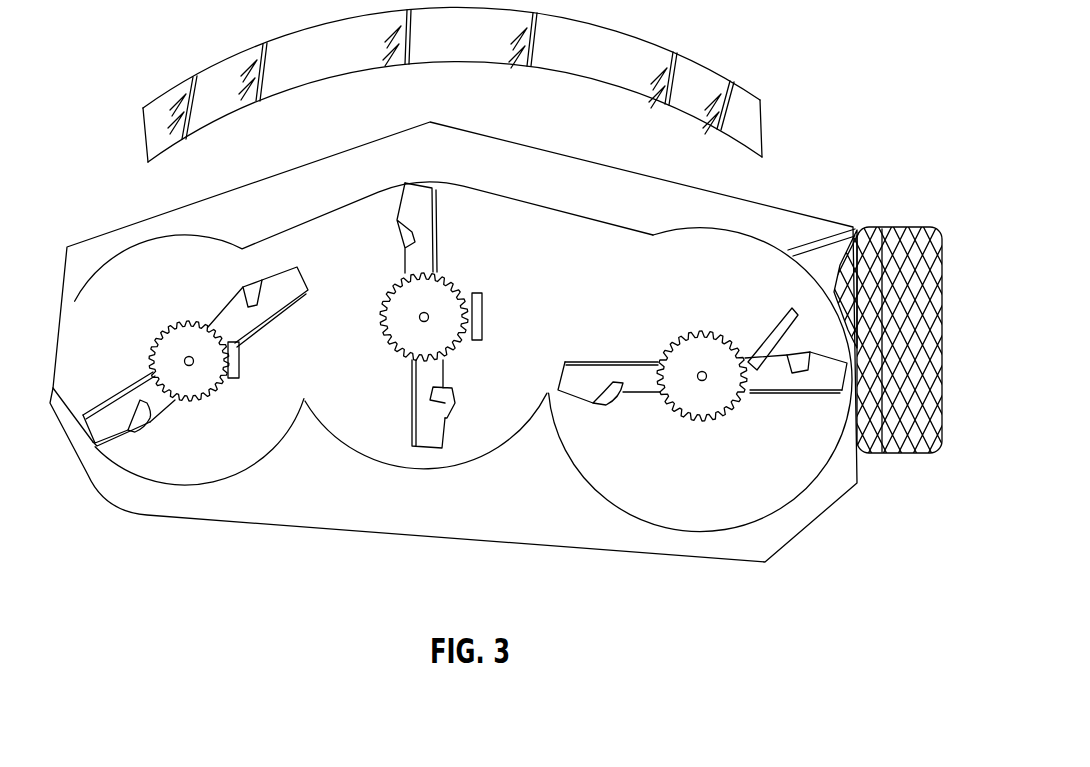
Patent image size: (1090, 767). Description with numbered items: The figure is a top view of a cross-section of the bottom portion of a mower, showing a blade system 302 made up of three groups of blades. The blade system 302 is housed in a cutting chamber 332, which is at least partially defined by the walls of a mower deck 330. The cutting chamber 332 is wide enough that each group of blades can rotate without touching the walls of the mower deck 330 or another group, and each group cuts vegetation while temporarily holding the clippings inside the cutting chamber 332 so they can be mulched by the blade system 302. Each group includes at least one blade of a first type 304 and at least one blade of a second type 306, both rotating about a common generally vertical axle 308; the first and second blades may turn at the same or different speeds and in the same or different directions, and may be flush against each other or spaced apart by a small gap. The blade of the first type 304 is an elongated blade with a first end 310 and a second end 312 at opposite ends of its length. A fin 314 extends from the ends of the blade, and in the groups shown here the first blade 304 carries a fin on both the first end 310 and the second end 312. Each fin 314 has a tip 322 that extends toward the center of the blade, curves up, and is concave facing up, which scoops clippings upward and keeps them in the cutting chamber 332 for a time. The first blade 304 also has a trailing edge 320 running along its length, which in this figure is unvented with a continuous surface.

The blade system 302 is at (482, 217).
The blade of a first type 304 is at (606, 345).
The blade of a second type 306 is at (703, 370).
The generally vertical axle 308 is at (187, 357).
The first end 310 is at (98, 388).
The second end 312 is at (280, 268).
The fin 314 is at (145, 438).
The trailing edge 320 is at (95, 470).
The tip of the fin 322 is at (158, 432).
The mower deck 330 is at (553, 526).
The cutting chamber 332 is at (694, 492).